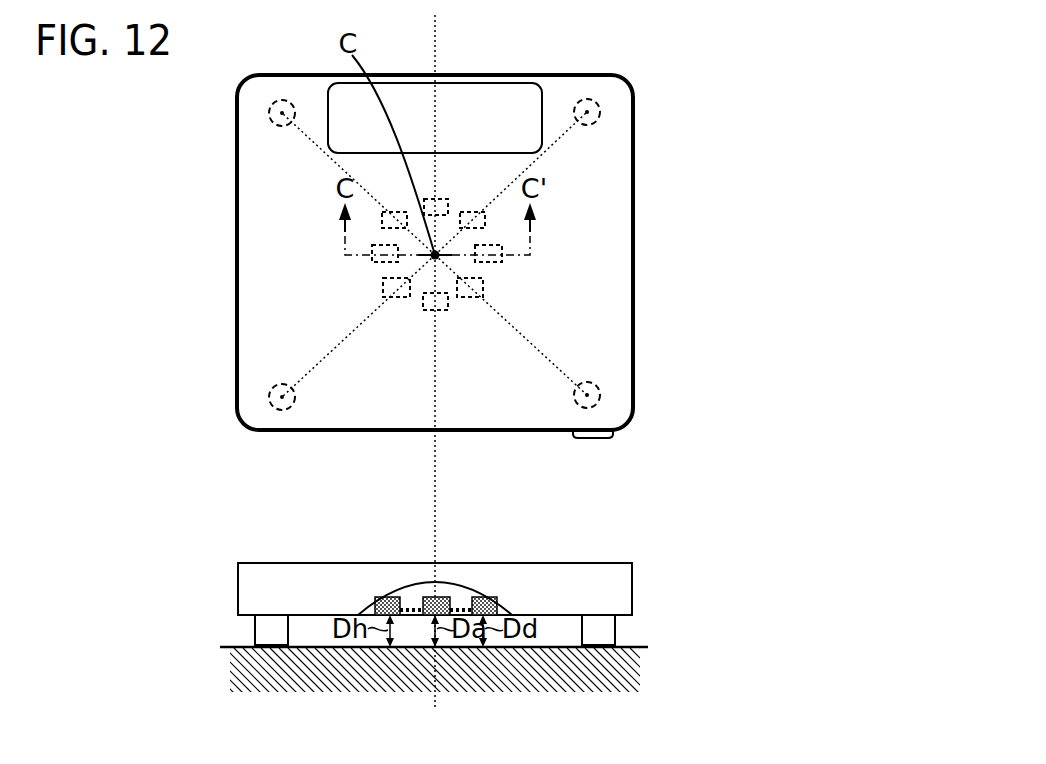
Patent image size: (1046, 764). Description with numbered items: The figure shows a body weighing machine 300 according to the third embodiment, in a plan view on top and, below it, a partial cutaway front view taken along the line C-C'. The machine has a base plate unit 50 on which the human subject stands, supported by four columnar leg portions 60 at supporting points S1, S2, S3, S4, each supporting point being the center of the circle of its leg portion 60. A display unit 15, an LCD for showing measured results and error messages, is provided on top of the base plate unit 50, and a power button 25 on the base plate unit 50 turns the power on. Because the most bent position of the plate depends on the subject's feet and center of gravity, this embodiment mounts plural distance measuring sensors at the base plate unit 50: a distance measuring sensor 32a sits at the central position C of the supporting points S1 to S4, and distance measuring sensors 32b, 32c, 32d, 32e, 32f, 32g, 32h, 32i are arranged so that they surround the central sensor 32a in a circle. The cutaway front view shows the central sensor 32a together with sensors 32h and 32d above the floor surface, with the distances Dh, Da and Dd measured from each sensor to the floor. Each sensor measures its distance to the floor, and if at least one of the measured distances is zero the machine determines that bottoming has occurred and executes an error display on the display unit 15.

The body weighing machine 300 is at (738, 86).
The base plate unit 50 is at (633, 165).
The display unit 15 is at (488, 84).
The power button 25 is at (604, 440).
The leg portion 60 is at (280, 100).
The supporting point S1 is at (270, 115).
The supporting point S2 is at (270, 403).
The supporting point S3 is at (600, 392).
The supporting point S4 is at (600, 107).
The distance measuring sensor 32a is at (452, 272).
The distance measuring sensor 32b is at (432, 198).
The distance measuring sensor 32c is at (468, 212).
The distance measuring sensor 32d is at (500, 258).
The distance measuring sensor 32e is at (472, 297).
The distance measuring sensor 32f is at (435, 310).
The distance measuring sensor 32g is at (392, 297).
The distance measuring sensor 32h is at (372, 258).
The distance measuring sensor 32i is at (384, 212).